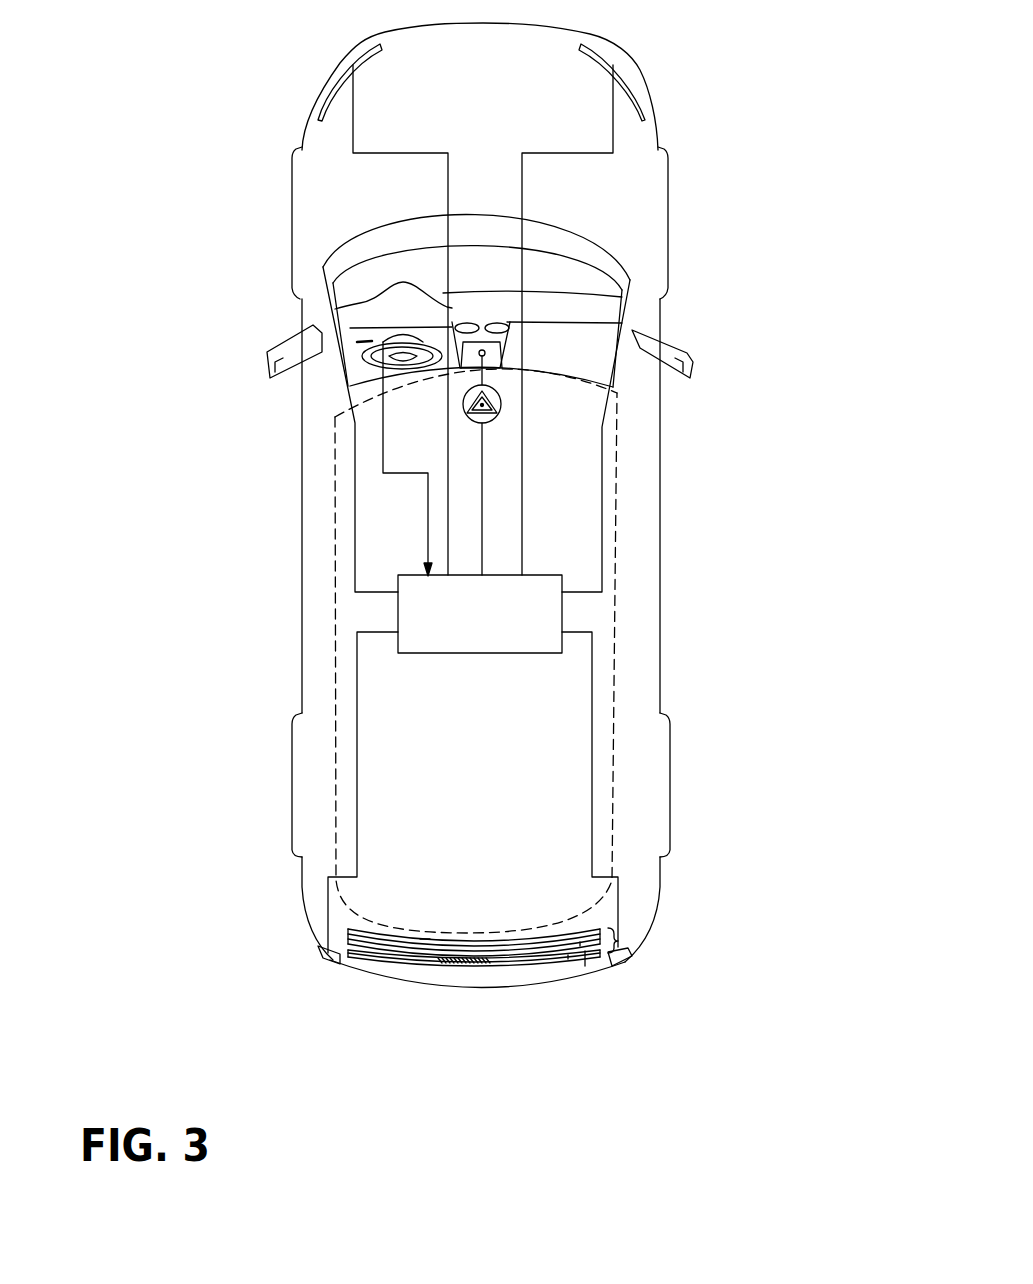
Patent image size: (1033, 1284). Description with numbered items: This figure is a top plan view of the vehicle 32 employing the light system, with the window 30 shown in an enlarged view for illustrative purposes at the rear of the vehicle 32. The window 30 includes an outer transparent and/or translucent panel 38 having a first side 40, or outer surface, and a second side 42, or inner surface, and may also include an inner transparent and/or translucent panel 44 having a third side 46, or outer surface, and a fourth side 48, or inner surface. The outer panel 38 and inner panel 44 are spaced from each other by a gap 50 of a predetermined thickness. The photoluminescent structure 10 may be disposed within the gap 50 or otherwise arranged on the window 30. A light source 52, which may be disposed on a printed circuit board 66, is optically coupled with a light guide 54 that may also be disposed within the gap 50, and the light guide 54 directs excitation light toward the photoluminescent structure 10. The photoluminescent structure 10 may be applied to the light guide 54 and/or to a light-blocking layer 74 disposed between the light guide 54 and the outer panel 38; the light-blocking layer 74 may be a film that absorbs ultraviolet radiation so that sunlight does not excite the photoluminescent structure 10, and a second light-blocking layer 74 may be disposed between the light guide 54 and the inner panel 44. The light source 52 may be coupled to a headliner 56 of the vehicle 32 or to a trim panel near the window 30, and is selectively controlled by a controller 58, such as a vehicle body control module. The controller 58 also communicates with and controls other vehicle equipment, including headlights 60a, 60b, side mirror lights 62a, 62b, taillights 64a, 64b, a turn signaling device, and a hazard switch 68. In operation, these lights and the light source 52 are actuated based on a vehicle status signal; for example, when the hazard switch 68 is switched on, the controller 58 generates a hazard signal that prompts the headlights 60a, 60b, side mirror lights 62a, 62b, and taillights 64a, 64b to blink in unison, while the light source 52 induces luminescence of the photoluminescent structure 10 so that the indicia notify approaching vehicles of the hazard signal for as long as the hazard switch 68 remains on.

The photoluminescent structure 10 is at (463, 965).
The window 30 is at (468, 963).
The vehicle 32 is at (712, 123).
The outer transparent and/or translucent panel 38 is at (348, 953).
The first side 40 is at (370, 965).
The second side 42 is at (395, 961).
The inner transparent and/or translucent panel 44 is at (347, 941).
The third side 46 is at (403, 937).
The fourth side 48 is at (424, 943).
The gap 50 is at (618, 941).
The light source 52 is at (347, 937).
The light guide 54 is at (587, 957).
The headliner 56 is at (617, 507).
The controller 58 is at (562, 611).
The headlight 60a is at (366, 50).
The headlight 60b is at (603, 55).
The side mirror light 62a is at (267, 352).
The side mirror light 62b is at (693, 352).
The taillight 64a is at (328, 953).
The taillight 64b is at (630, 957).
The printed circuit board 66 is at (362, 342).
The hazard switch 68 is at (468, 418).
The light-blocking layer 74 is at (580, 944).